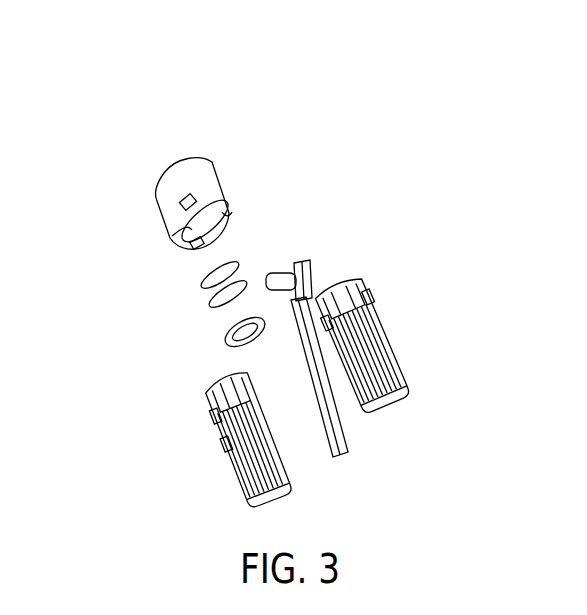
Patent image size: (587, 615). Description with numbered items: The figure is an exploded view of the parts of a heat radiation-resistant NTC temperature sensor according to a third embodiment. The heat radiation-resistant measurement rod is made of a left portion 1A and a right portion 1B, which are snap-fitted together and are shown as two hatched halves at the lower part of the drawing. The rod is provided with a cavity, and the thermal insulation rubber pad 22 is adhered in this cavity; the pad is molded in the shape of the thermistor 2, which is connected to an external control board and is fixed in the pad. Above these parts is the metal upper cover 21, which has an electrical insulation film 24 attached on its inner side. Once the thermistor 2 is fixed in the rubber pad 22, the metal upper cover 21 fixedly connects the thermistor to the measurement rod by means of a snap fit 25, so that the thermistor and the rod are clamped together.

The metal upper cover 21 is at (216, 156).
The snap fit 25 is at (231, 210).
The electrical insulation film 24 is at (203, 289).
The thermal insulation rubber pad 22 is at (224, 337).
The thermistor 2 is at (291, 266).
The left portion 1A is at (216, 468).
The right portion 1B is at (415, 352).